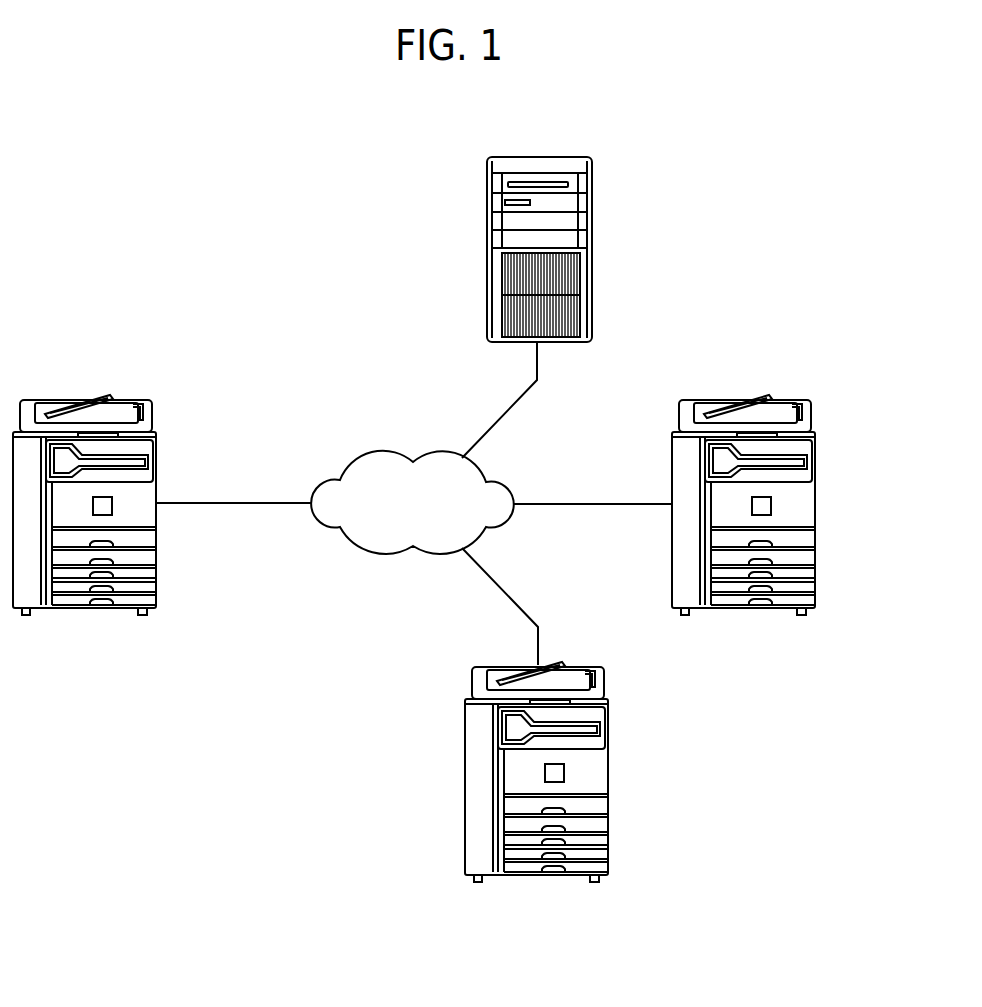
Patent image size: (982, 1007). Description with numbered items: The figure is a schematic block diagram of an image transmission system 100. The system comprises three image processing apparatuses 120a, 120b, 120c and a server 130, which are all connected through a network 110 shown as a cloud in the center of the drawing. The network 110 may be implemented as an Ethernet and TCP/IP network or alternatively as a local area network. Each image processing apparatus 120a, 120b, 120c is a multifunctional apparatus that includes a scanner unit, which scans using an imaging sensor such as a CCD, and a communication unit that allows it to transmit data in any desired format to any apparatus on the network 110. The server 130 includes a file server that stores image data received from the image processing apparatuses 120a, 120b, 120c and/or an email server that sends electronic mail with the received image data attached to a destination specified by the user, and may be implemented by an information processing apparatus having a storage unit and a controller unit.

The image transmission system 100 is at (277, 185).
The network 110 is at (500, 484).
The image processing apparatus 120a is at (157, 461).
The image processing apparatus 120b is at (817, 508).
The image processing apparatus 120c is at (610, 774).
The server 130 is at (593, 206).